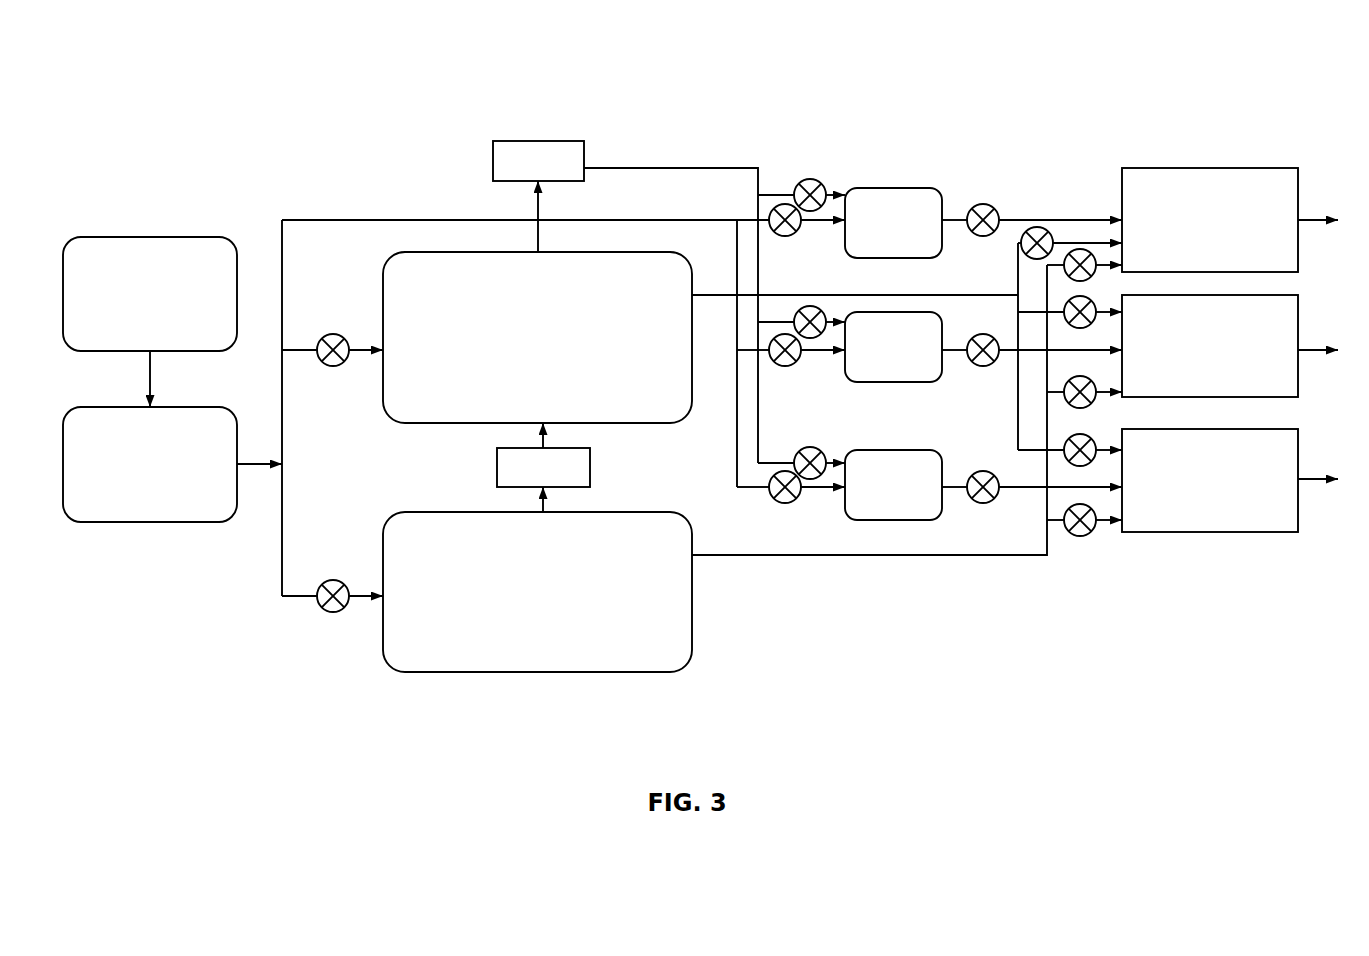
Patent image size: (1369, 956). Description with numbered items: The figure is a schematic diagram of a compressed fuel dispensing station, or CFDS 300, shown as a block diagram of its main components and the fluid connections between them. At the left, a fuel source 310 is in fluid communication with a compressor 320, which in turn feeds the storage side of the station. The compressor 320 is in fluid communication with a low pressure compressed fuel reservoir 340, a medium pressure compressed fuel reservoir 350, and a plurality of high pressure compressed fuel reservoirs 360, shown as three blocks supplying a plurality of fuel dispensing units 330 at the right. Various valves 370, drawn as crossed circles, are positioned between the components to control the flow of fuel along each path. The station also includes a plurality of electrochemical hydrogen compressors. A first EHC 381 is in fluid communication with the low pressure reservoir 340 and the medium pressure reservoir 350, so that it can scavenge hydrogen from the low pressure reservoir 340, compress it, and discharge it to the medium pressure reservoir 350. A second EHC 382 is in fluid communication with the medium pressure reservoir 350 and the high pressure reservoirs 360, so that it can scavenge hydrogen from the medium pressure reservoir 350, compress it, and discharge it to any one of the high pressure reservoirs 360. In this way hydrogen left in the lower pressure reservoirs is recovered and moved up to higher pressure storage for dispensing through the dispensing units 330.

The compressed fuel dispensing station 300 is at (226, 143).
The fuel source 310 is at (150, 294).
The compressor 320 is at (150, 464).
The fuel dispensing units 330 is at (1230, 350).
The low pressure compressed fuel reservoir 340 is at (537, 592).
The medium pressure compressed fuel reservoir 350 is at (537, 337).
The high pressure compressed fuel reservoirs 360 is at (893, 354).
The valves 370 is at (982, 192).
The first electrochemical hydrogen compressor 381 is at (543, 467).
The second electrochemical hydrogen compressor 382 is at (538, 161).